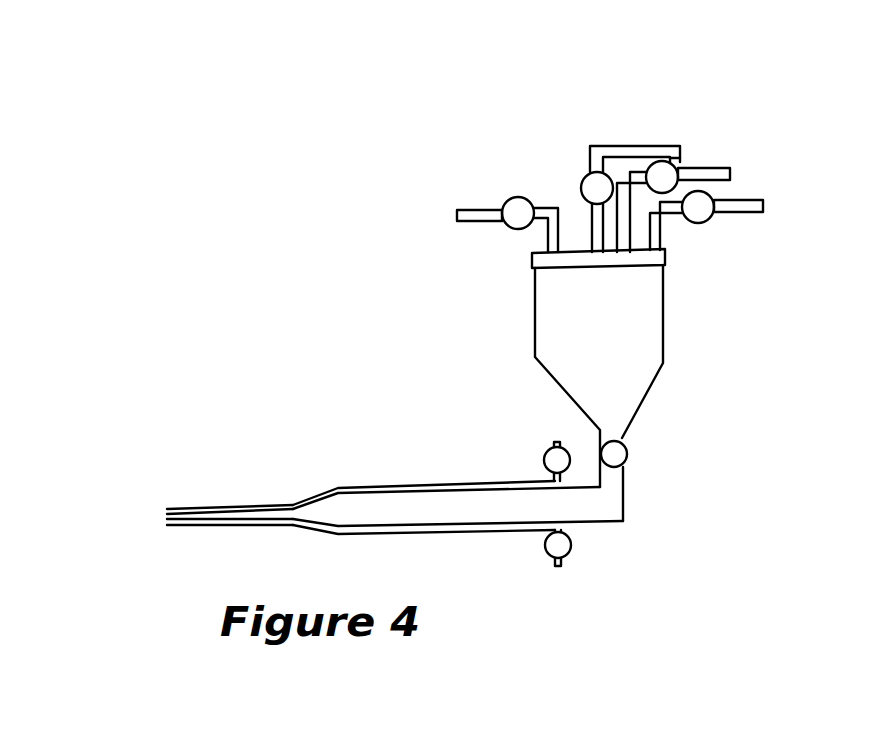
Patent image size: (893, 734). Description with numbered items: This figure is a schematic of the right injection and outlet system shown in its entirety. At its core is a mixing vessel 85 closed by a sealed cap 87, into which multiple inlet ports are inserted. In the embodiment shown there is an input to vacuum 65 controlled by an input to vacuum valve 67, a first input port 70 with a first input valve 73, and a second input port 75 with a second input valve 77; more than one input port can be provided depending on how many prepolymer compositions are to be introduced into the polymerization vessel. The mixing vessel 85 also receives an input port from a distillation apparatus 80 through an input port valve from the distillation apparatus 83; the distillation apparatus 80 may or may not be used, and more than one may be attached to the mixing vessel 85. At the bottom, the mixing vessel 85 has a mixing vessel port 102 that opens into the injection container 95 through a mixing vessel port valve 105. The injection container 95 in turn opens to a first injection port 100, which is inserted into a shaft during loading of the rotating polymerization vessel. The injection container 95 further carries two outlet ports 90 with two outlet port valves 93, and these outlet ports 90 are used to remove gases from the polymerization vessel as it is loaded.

The input to vacuum 65 is at (699, 164).
The input to vacuum valve 67 is at (680, 160).
The first input port 70 is at (743, 198).
The first input valve 73 is at (713, 222).
The second input port 75 is at (473, 208).
The second input valve 77 is at (508, 163).
The distillation apparatus 80 is at (642, 147).
The input port valve from the distillation apparatus 83 is at (580, 182).
The mixing vessel 85 is at (535, 312).
The sealed cap 87 is at (532, 255).
The outlet ports 90 is at (555, 442).
The outlet port valves 93 is at (544, 455).
The injection container 95 is at (380, 487).
The first injection port 100 is at (192, 497).
The mixing vessel port 102 is at (627, 434).
The mixing vessel port valve 105 is at (627, 462).